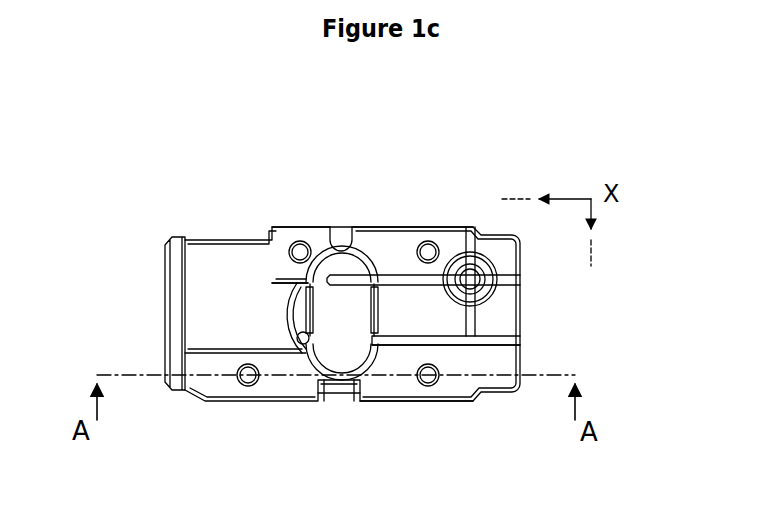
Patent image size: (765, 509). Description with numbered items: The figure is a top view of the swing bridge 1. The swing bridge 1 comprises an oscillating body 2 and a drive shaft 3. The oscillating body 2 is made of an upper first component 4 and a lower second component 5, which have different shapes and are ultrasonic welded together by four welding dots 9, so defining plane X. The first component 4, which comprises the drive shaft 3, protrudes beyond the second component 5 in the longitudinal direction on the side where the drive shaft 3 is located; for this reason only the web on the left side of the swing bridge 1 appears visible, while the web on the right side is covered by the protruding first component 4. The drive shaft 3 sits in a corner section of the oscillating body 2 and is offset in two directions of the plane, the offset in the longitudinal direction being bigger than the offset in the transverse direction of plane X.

The swing bridge 1 is at (148, 136).
The oscillating body 2 is at (359, 210).
The drive shaft 3 is at (467, 270).
The first component 4 is at (498, 355).
The second component 5 is at (235, 243).
The welding dots 9 is at (291, 245).